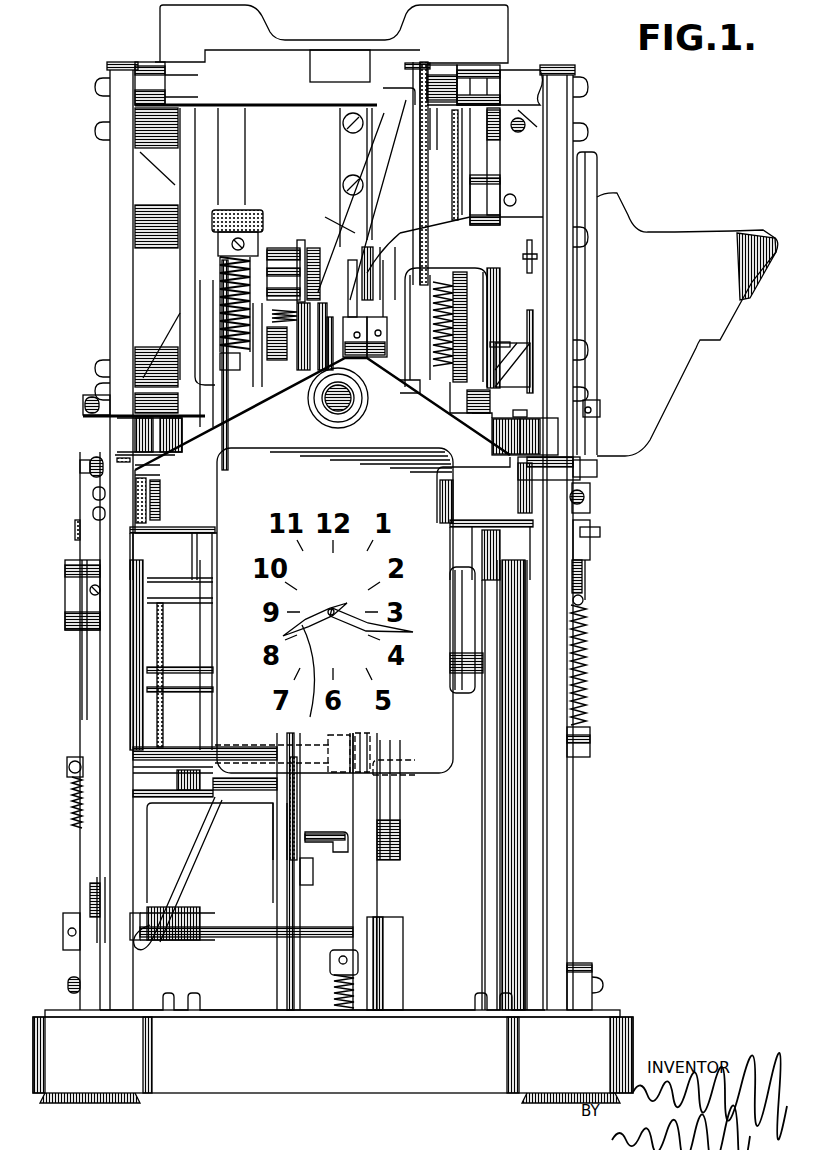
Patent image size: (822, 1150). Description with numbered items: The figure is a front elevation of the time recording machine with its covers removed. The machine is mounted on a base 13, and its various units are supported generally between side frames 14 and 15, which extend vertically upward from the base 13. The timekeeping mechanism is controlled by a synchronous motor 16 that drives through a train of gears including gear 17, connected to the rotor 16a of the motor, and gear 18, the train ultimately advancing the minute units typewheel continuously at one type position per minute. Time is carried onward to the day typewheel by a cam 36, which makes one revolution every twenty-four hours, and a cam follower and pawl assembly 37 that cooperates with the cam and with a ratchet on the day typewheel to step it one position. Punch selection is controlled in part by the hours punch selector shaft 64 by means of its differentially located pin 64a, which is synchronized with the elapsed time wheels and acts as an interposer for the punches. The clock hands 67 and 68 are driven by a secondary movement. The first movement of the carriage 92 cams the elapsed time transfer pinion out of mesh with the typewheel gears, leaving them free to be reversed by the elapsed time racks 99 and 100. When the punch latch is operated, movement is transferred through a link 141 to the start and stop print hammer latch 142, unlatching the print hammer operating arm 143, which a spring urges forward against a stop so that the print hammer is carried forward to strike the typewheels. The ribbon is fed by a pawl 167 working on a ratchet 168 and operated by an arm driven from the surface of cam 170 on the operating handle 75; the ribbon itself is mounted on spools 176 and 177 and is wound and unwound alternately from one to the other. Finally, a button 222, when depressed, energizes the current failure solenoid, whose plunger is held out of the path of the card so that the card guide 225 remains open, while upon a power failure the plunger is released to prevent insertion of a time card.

The base 13 is at (353, 1070).
The side frame 14 is at (118, 660).
The side frame 15 is at (563, 789).
The synchronous motor 16 is at (213, 877).
The rotor 16a is at (257, 890).
The gear 17 is at (296, 862).
The gear 18 is at (295, 824).
The cam 36 is at (313, 397).
The cam follower and pawl assembly 37 is at (300, 247).
The hours punch selector shaft 64 is at (207, 557).
The pin 64a is at (197, 627).
The clock hand 67 is at (315, 670).
The clock hand 68 is at (384, 625).
The operating handle 75 is at (692, 243).
The carriage 92 is at (355, 233).
The elapsed time rack 99 is at (429, 62).
The elapsed time rack 100 is at (463, 62).
The link 141 is at (343, 215).
The start and stop print hammer latch 142 is at (360, 270).
The print hammer operating arm 143 is at (367, 312).
The pawl 167 is at (583, 555).
The ratchet 168 is at (590, 500).
The cam 170 is at (585, 443).
The spool 176 is at (108, 420).
The spool 177 is at (587, 430).
The button 222 is at (363, 413).
The card guide 225 is at (414, 33).